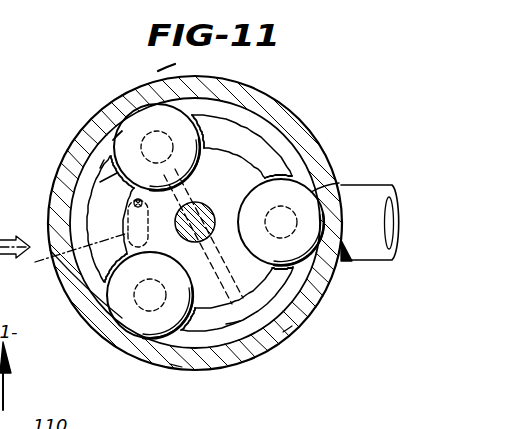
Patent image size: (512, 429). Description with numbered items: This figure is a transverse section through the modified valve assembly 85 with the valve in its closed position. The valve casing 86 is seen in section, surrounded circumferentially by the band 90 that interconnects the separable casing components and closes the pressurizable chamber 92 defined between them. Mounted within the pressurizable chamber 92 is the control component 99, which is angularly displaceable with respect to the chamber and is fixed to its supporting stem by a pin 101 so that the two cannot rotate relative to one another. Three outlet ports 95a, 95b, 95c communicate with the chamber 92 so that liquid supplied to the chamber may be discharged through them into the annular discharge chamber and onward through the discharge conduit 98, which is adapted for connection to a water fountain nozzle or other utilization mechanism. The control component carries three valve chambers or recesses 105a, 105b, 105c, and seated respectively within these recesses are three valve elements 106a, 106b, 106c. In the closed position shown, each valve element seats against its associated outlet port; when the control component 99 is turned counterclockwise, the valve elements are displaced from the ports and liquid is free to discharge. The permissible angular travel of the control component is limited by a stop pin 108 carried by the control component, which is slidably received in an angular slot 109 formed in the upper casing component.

The valve assembly 85 is at (195, 210).
The valve casing 86 is at (169, 70).
The band 90 is at (107, 108).
The pressurizable chamber 92 is at (281, 143).
The outlet port 95a is at (281, 222).
The outlet port 95b is at (150, 295).
The outlet port 95c is at (157, 147).
The discharge conduit 98 is at (348, 263).
The control component 99 is at (100, 167).
The pin 101 is at (232, 326).
The valve chamber 105a is at (286, 328).
The valve chamber 105b is at (175, 362).
The valve chamber 105c is at (100, 182).
The valve element 106a is at (340, 183).
The valve element 106b is at (123, 312).
The valve element 106c is at (113, 140).
The stop pin 108 is at (125, 203).
The angular slot 109 is at (62, 272).